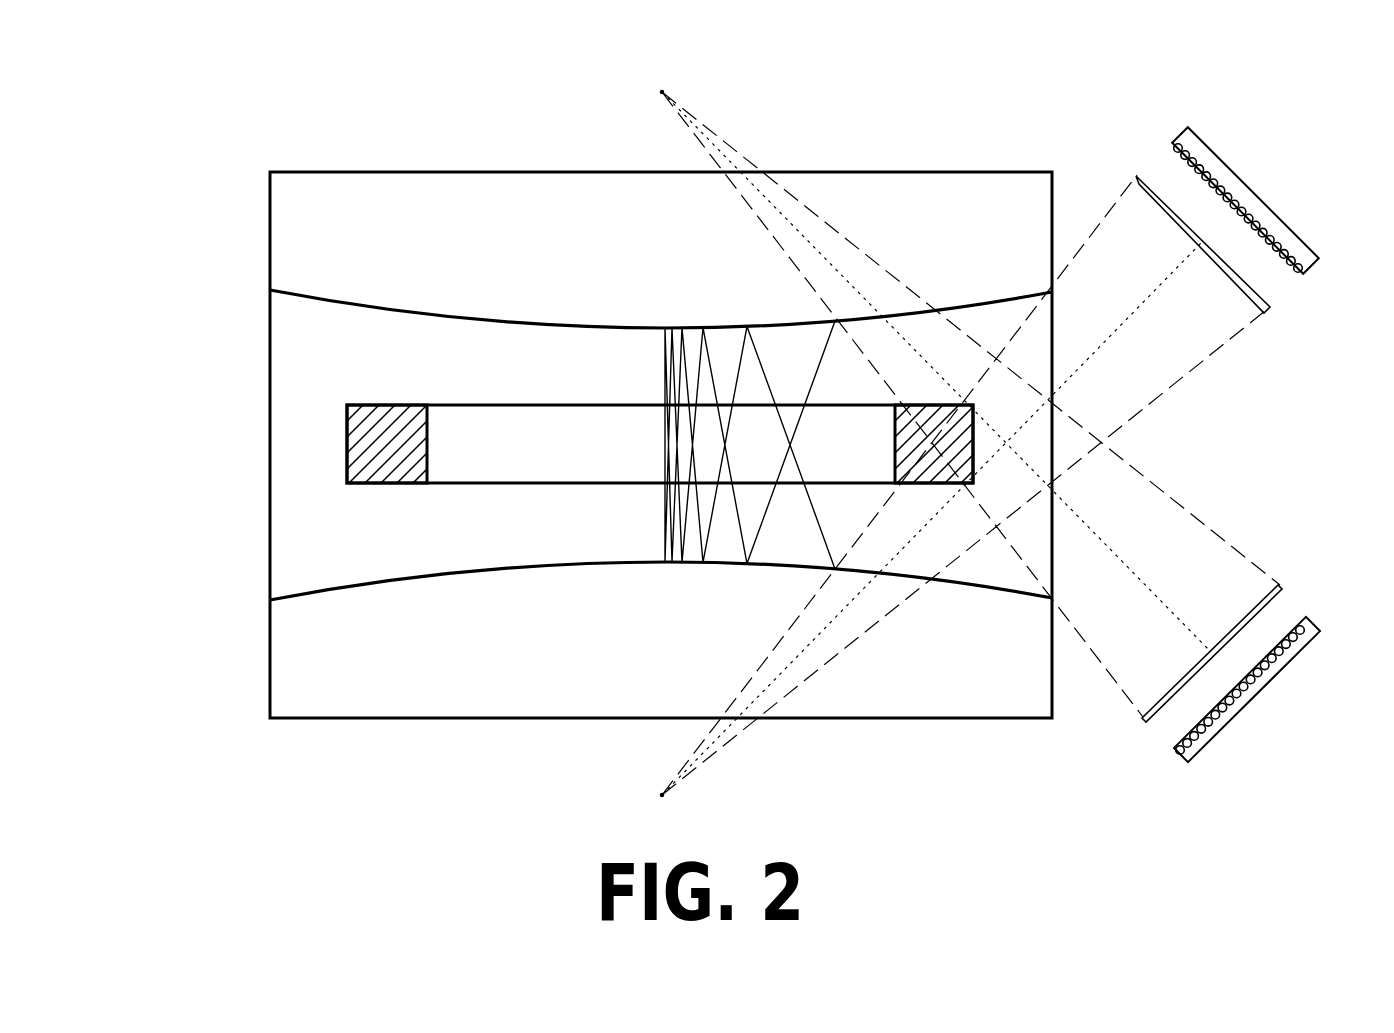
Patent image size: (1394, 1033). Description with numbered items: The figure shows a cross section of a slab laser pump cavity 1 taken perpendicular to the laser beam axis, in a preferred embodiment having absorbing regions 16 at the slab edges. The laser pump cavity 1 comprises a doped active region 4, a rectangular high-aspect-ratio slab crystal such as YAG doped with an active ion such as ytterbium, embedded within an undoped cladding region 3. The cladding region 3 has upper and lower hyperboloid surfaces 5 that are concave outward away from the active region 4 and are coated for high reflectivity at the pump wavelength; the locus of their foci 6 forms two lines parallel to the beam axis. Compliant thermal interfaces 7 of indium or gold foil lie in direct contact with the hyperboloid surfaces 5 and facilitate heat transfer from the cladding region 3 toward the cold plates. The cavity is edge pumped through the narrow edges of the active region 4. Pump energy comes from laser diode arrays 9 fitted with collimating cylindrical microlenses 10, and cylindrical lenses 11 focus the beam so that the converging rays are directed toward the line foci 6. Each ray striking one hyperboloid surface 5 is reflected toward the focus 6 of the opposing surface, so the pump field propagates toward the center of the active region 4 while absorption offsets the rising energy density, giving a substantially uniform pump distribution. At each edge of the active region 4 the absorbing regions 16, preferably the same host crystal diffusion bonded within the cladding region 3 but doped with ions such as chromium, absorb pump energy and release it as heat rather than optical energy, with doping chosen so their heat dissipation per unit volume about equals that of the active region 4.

The laser pump cavity 1 is at (313, 93).
The undoped cladding region 3 is at (318, 361).
The active region 4 is at (573, 437).
The hyperboloid surfaces 5 is at (330, 305).
The line foci 6 is at (665, 84).
The compliant thermal interfaces 7 is at (372, 305).
The laser diode arrays 9 is at (1297, 649).
The collimating cylindrical microlenses 10 is at (1180, 731).
The cylindrical lenses 11 is at (1275, 583).
The absorbing regions 16 is at (370, 472).